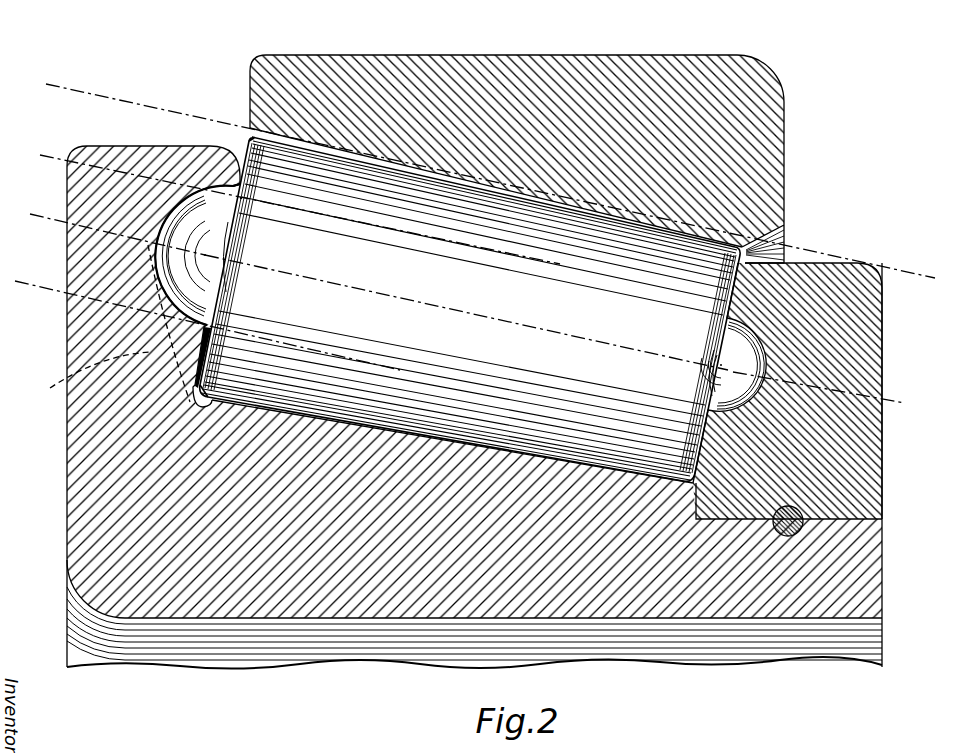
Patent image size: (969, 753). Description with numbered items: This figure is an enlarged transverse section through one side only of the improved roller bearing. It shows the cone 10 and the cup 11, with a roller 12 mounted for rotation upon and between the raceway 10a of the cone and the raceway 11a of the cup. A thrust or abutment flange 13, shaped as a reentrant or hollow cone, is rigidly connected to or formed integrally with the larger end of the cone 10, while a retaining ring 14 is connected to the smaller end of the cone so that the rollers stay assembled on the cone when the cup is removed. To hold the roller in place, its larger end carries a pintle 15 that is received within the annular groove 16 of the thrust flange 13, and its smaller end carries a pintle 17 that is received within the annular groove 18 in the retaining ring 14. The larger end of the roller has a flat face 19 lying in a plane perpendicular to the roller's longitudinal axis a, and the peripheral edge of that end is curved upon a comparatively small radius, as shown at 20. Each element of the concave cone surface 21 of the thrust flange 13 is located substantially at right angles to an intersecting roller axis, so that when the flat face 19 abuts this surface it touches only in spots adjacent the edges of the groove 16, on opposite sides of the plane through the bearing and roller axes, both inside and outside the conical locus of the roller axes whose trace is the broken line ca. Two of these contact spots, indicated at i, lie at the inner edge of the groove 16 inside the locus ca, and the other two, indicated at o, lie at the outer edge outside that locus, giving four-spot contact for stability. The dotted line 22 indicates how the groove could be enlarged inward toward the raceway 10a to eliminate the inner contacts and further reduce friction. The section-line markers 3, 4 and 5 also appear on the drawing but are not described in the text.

The cone 10 is at (437, 652).
The raceway of the cone 10a is at (522, 460).
The cup 11 is at (440, 72).
The raceway of the cup 11a is at (600, 218).
The roller 12 is at (470, 309).
The thrust flange 13 is at (82, 340).
The retaining ring 14 is at (870, 353).
The pintle 15 is at (186, 256).
The annular groove 16 is at (173, 293).
The pintle 17 is at (722, 360).
The annular groove 18 is at (760, 336).
The flat face 19 is at (240, 185).
The curved peripheral edge 20 is at (250, 136).
The concave cone surface 21 is at (207, 353).
The dotted line 22 is at (105, 323).
The section line 3 is at (411, 252).
The section line 4 is at (383, 385).
The section line 5 is at (923, 296).
The longitudinal axis of the roller a is at (469, 313).
The conical locus of the roller axes ca is at (468, 309).
The inner spot of contact i is at (213, 330).
The outer spot of contact o is at (243, 199).